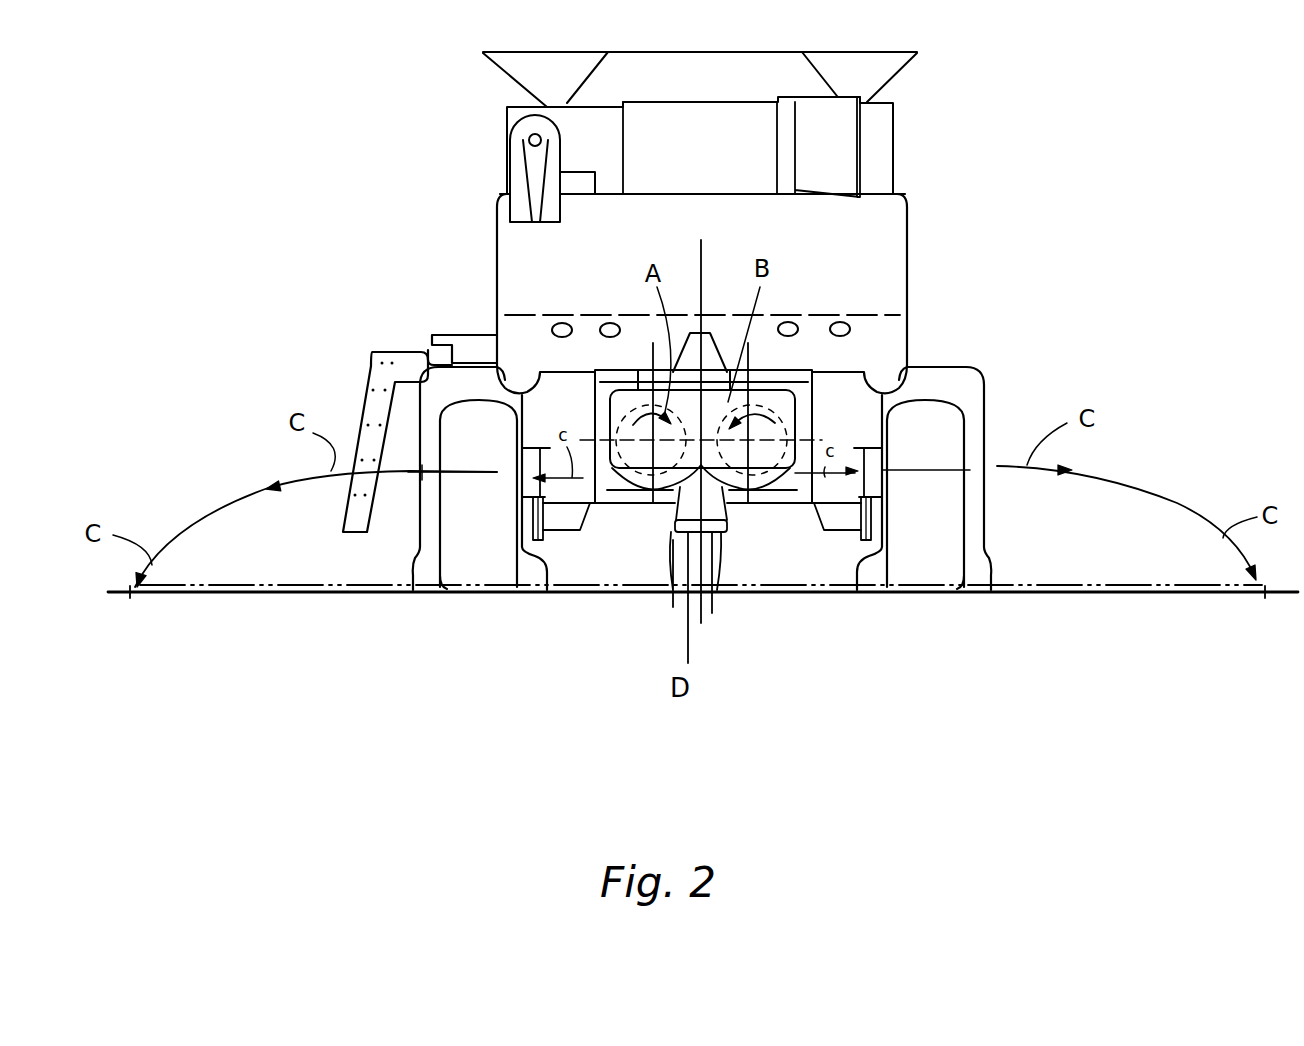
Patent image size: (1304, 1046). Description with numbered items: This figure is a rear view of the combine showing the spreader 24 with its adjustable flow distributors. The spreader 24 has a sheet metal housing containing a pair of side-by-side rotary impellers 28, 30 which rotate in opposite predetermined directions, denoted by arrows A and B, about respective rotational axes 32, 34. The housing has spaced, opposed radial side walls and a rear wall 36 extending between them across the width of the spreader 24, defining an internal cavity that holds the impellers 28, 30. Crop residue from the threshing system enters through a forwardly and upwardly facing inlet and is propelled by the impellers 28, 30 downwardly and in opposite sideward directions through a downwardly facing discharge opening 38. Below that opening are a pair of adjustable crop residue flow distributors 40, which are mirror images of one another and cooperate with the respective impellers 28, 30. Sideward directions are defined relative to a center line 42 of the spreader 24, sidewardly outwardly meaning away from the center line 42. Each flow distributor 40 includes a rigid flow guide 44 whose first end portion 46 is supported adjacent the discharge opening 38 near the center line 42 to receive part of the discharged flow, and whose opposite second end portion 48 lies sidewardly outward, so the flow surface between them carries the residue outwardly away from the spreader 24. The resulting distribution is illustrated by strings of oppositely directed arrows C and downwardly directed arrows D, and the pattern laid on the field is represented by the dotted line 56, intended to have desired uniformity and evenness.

The spreader 24 is at (812, 397).
The rotary impeller 28 is at (612, 382).
The rotary impeller 30 is at (758, 405).
The rotational axis 32 is at (652, 440).
The rotational axis 34 is at (749, 440).
The rear wall 36 is at (710, 372).
The discharge opening 38 is at (781, 503).
The crop residue flow distributor 40 is at (620, 498).
The center line 42 is at (701, 256).
The flow guide 44 is at (645, 500).
The first end portion 46 is at (694, 575).
The second end portion 48 is at (613, 487).
The dotted line 56 is at (1057, 583).